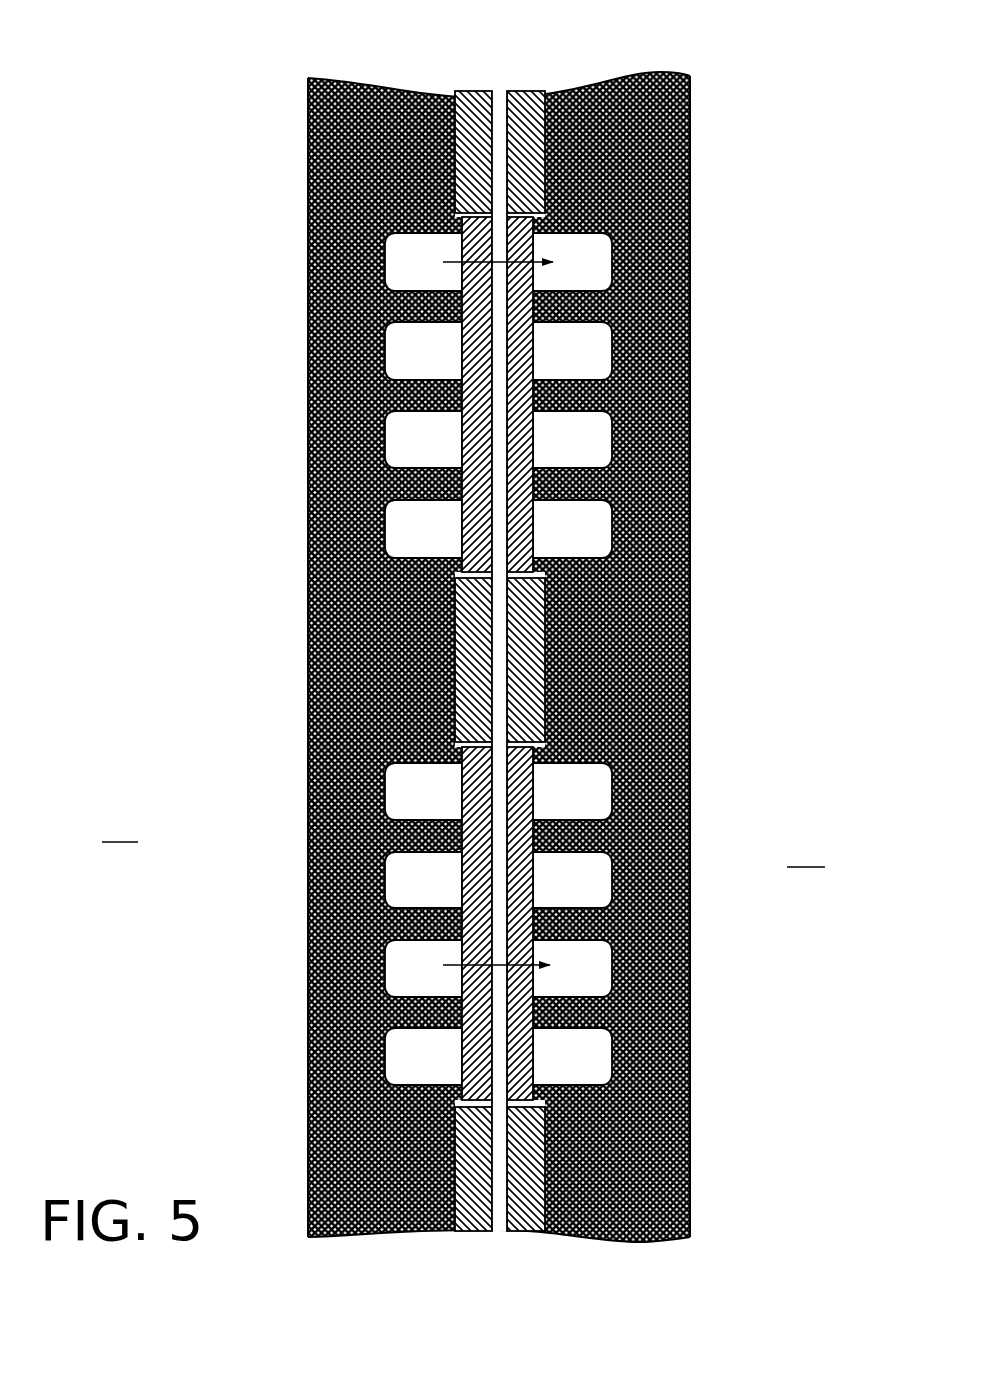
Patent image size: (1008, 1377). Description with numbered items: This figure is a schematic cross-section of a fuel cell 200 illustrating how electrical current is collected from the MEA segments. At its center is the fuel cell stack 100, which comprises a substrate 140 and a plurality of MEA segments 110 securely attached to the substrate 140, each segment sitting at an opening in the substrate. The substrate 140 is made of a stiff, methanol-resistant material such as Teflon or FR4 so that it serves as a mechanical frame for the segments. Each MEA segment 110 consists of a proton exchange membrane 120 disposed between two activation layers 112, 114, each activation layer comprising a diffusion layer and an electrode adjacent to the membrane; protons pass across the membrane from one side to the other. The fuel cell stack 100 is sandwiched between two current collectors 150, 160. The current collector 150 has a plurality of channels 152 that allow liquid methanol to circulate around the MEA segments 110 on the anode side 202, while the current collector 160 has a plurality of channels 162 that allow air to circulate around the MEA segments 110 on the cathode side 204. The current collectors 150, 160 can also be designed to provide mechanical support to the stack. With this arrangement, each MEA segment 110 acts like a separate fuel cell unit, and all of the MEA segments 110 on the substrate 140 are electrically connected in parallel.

The fuel cell stack 100 is at (545, 72).
The MEA segment 110 is at (567, 350).
The activation layer 112 is at (470, 530).
The activation layer 114 is at (517, 530).
The proton exchange membrane 120 is at (500, 478).
The substrate 140 is at (505, 160).
The current collector 150 is at (308, 737).
The channels 152 is at (418, 453).
The current collector 160 is at (690, 710).
The channels 162 is at (580, 445).
The fuel cell 200 is at (108, 638).
The anode side 202 is at (121, 830).
The cathode side 204 is at (806, 855).